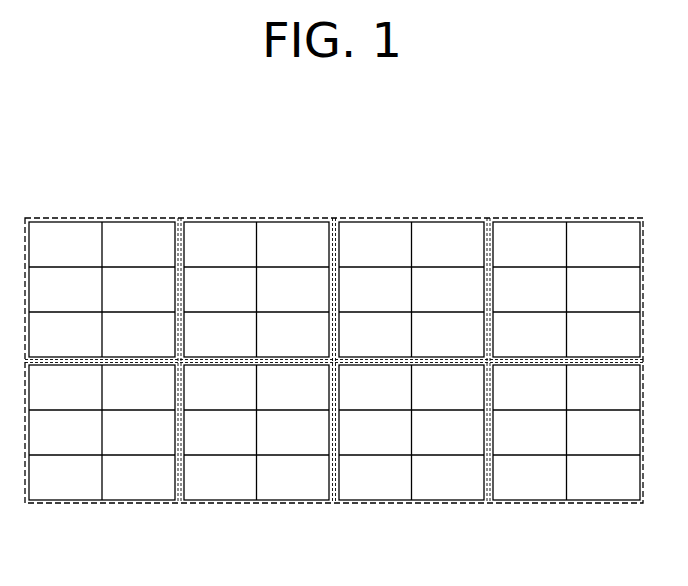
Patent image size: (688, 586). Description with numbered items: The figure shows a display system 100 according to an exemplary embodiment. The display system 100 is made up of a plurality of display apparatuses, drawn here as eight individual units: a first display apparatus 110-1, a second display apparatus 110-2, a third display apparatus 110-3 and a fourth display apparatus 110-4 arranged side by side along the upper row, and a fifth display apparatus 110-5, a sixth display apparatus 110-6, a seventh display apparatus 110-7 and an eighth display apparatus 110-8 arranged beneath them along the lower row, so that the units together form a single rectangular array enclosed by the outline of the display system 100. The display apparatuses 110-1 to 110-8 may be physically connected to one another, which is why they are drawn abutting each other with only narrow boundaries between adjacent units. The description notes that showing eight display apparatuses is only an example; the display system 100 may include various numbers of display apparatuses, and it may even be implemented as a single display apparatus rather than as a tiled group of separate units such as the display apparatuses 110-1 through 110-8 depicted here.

The display system 100 is at (322, 108).
The display apparatus 110-1 is at (145, 216).
The display apparatus 110-2 is at (299, 216).
The display apparatus 110-3 is at (452, 216).
The display apparatus 110-4 is at (603, 216).
The display apparatus 110-5 is at (145, 505).
The display apparatus 110-6 is at (299, 505).
The display apparatus 110-7 is at (452, 505).
The display apparatus 110-8 is at (603, 505).